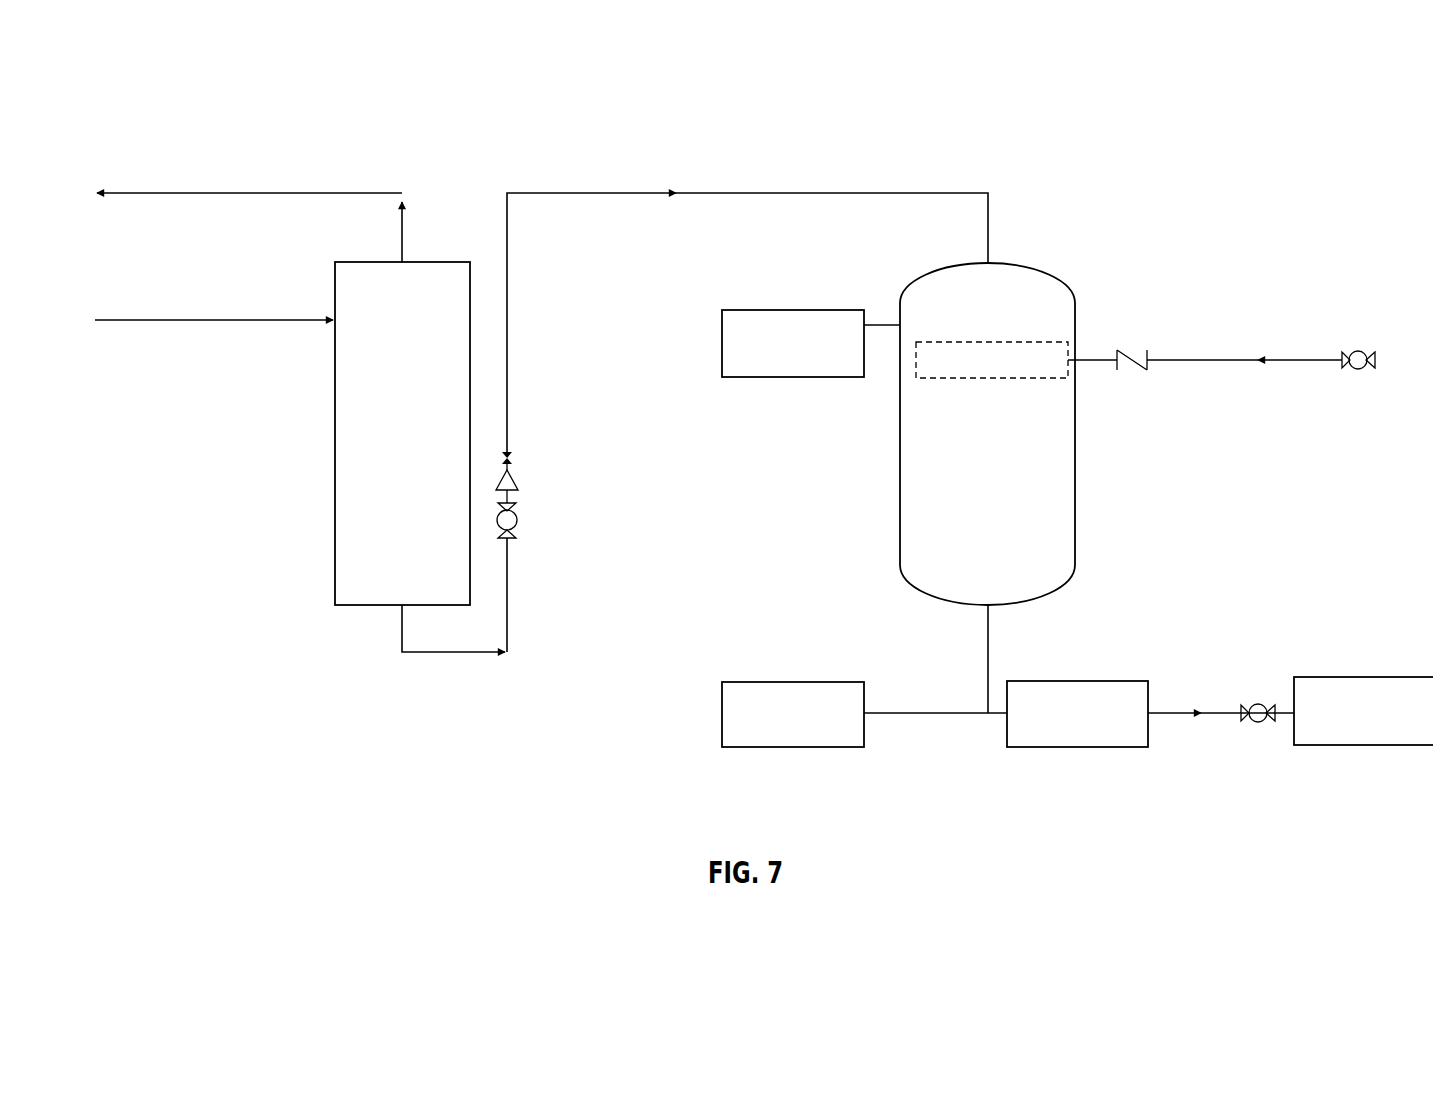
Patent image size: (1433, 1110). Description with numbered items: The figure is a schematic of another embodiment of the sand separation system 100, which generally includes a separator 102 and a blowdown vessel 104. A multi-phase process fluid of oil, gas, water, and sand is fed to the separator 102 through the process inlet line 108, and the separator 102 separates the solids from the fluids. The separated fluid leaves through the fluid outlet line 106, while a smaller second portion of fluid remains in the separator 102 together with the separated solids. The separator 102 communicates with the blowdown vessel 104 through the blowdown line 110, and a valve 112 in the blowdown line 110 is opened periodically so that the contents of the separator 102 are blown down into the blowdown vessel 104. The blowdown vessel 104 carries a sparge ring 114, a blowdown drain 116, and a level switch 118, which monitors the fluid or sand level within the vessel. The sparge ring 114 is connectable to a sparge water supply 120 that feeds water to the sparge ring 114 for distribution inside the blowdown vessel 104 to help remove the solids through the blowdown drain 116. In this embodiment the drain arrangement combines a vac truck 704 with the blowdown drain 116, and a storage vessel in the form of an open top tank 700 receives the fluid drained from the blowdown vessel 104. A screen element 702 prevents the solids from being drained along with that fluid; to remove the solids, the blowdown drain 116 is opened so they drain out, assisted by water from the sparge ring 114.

The sand separation system 100 is at (150, 78).
The separator 102 is at (425, 262).
The blowdown vessel 104 is at (1028, 267).
The fluid outlet line 106 is at (320, 188).
The process inlet line 108 is at (173, 323).
The blowdown line 110 is at (595, 188).
The valve 112 is at (518, 520).
The sparge ring 114 is at (1018, 378).
The blowdown drain 116 is at (895, 716).
The level switch 118 is at (793, 307).
The sparge water supply 120 is at (1357, 370).
The open top tank 700 is at (1367, 677).
The screen element 702 is at (1078, 678).
The vac truck 704 is at (793, 678).